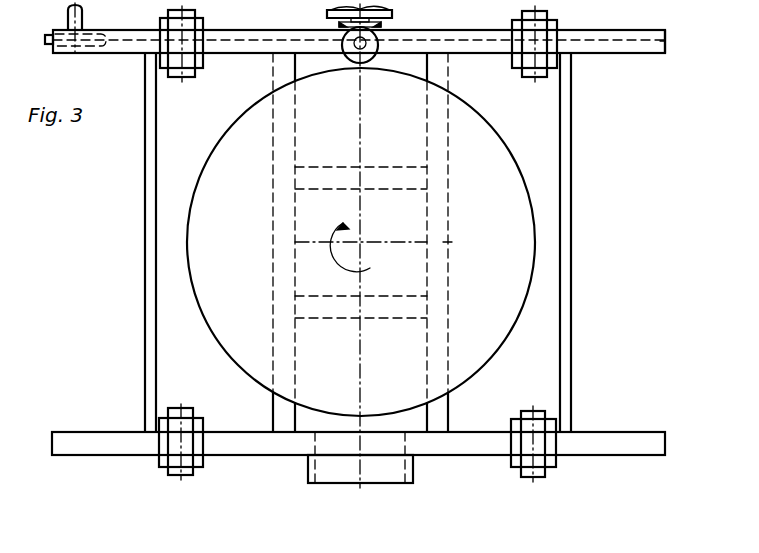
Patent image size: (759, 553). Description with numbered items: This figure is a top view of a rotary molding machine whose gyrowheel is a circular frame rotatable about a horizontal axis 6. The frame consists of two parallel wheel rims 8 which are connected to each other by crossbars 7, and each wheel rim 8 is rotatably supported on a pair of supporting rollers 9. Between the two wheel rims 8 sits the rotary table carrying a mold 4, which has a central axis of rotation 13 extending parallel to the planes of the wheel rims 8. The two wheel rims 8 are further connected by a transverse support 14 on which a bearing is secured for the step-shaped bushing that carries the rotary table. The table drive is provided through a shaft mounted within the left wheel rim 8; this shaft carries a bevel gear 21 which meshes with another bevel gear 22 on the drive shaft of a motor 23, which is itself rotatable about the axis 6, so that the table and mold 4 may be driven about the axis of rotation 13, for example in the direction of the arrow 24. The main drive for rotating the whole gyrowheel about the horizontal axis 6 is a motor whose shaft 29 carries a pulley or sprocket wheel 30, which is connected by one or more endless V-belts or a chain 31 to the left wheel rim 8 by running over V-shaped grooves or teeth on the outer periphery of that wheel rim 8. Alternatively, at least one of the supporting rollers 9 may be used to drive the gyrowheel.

The mold 4 is at (510, 225).
The horizontal axis 6 is at (359, 371).
The crossbars 7 is at (149, 262).
The wheel rims 8 is at (622, 49).
The supporting rollers 9 is at (552, 27).
The central axis of rotation 13 is at (364, 241).
The transverse support 14 is at (445, 312).
The bevel gear 21 is at (375, 26).
The bevel gear 22 is at (345, 27).
The motor 23 is at (393, 14).
The arrow 24 is at (345, 237).
The shaft 29 is at (83, 16).
The pulley or sprocket wheel 30 is at (93, 47).
The V-belts or chain 31 is at (651, 43).